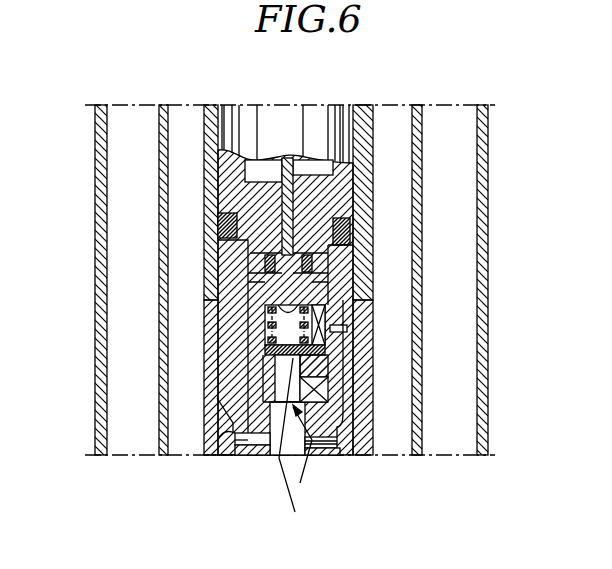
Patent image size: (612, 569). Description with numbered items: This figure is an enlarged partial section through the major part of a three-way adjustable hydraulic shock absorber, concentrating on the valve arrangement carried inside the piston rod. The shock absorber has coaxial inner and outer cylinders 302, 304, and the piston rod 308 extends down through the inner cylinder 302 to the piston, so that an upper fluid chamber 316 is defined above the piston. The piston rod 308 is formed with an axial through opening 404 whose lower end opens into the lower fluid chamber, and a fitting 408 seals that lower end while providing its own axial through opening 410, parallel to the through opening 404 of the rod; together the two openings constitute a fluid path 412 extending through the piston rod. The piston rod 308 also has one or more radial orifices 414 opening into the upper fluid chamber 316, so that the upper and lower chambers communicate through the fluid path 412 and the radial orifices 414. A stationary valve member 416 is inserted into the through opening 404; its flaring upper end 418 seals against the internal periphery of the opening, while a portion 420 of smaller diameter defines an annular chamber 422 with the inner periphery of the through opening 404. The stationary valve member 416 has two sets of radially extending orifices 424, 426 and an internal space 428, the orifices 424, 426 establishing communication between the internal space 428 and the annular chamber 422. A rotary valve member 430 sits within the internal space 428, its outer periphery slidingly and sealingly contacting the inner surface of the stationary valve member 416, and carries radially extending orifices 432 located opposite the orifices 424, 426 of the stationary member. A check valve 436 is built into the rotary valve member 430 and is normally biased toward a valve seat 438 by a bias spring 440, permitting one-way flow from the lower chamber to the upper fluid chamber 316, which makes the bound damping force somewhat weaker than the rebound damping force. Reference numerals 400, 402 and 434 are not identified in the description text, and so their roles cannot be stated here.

The inner cylinder 302 is at (489, 212).
The outer cylinder 304 is at (417, 300).
The piston rod 308 is at (363, 120).
The upper fluid chamber 316 is at (373, 352).
The valve body 400 is at (371, 238).
The bore 402 is at (363, 361).
The axial through opening 404 is at (222, 450).
The fitting 408 is at (233, 452).
The axial through opening 410 is at (311, 456).
The fluid path 412 is at (320, 450).
The radial orifices 414 is at (328, 388).
The stationary valve member 416 is at (227, 330).
The flaring upper end 418 is at (230, 262).
The smaller-diameter portion 420 is at (237, 350).
The annular chamber 422 is at (223, 378).
The radially extending orifices 424 is at (340, 333).
The radially extending orifices 426 is at (375, 398).
The internal space 428 is at (313, 270).
The rotary valve member 430 is at (260, 450).
The radially extending orifices 432 is at (332, 328).
The retainer ring 434 is at (313, 450).
The check valve 436 is at (307, 449).
The valve seat 438 is at (253, 372).
The bias spring 440 is at (267, 323).